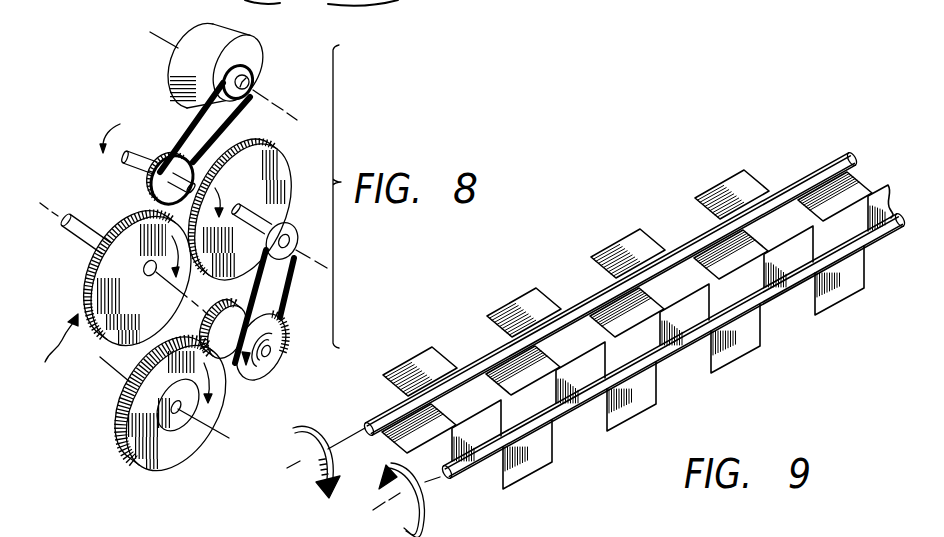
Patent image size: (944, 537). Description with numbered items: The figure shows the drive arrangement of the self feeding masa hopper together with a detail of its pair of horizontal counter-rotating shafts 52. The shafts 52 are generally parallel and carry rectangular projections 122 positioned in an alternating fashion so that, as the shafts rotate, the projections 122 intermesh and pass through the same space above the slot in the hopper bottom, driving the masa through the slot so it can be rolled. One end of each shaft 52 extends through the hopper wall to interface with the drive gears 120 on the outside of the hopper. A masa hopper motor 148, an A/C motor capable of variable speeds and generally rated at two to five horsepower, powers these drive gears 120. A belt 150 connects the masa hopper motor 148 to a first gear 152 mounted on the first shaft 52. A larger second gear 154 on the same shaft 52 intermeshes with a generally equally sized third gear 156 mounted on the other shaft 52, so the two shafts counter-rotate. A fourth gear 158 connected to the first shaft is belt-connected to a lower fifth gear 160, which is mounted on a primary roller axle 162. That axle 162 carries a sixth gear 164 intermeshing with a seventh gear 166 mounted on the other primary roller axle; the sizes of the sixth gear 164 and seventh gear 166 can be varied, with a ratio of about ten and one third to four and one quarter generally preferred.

In FIG. 8, the counter-rotating shafts 52 is at (135, 152).
In FIG. 9, the counter-rotating shafts 52 is at (807, 178).
In FIG. 8, the drive gears 120 is at (50, 349).
In FIG. 9, the rectangular projections 122 is at (732, 357).
In FIG. 8, the masa hopper motor 148 is at (256, 48).
In FIG. 8, the belt 150 is at (187, 118).
In FIG. 8, the first gear 152 is at (150, 193).
In FIG. 8, the second gear 154 is at (292, 177).
In FIG. 8, the third gear 156 is at (84, 296).
In FIG. 8, the fourth gear 158 is at (290, 226).
In FIG. 8, the fifth gear 160 is at (240, 381).
In FIG. 8, the primary roller axle 162 is at (250, 379).
In FIG. 8, the sixth gear 164 is at (222, 372).
In FIG. 8, the seventh gear 166 is at (176, 448).